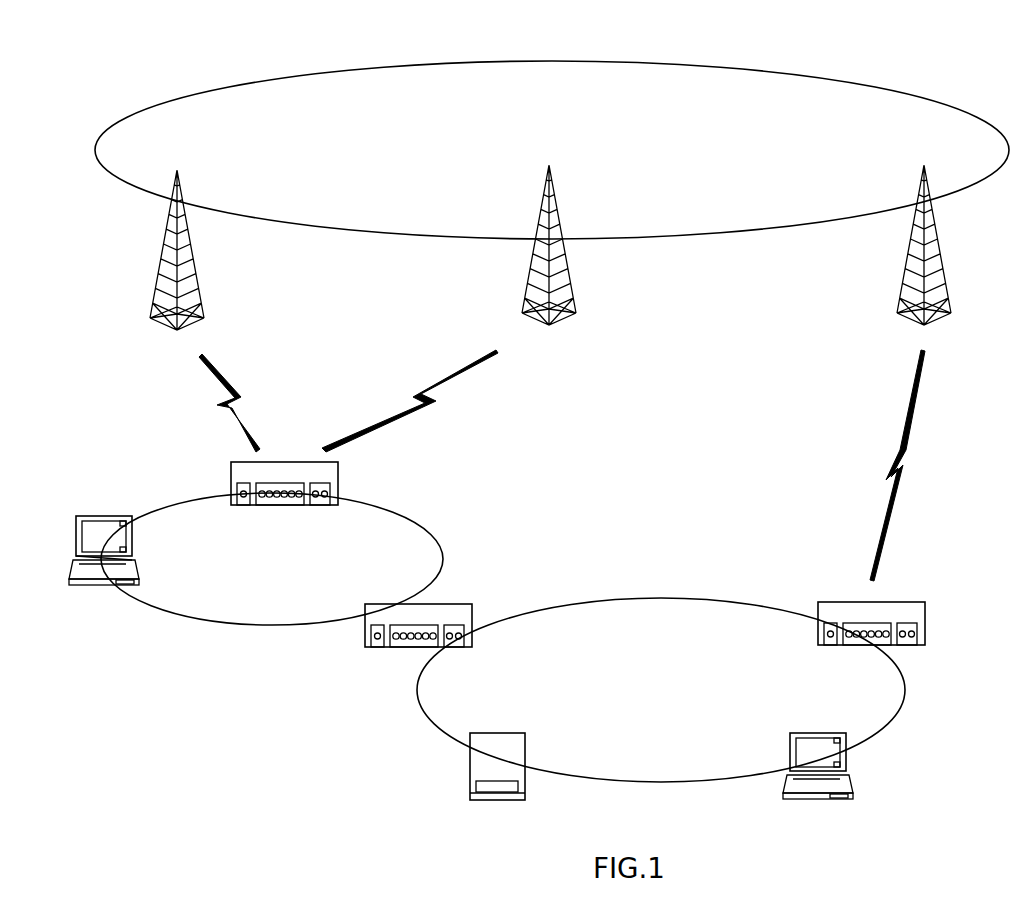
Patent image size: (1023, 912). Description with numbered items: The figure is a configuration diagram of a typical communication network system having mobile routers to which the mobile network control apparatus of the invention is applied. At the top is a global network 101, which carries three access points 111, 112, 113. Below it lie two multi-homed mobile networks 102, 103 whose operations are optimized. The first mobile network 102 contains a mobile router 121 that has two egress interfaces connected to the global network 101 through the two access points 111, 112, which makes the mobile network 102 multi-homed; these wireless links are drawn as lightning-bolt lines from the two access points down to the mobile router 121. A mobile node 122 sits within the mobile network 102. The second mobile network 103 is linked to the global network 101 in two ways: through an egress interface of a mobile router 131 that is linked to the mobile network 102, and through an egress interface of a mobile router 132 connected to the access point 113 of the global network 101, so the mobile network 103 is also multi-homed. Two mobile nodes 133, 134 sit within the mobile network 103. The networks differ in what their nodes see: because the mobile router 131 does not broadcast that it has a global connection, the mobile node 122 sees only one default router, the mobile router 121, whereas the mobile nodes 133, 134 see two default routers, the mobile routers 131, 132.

The global network 101 is at (613, 61).
The mobile network 102 is at (430, 528).
The mobile network 103 is at (690, 597).
The access point 111 is at (179, 171).
The access point 112 is at (551, 167).
The access point 113 is at (926, 167).
The mobile router 121 is at (338, 468).
The mobile node 122 is at (78, 588).
The mobile router 131 is at (466, 605).
The mobile router 132 is at (918, 603).
The mobile node 133 is at (468, 777).
The mobile node 134 is at (787, 800).